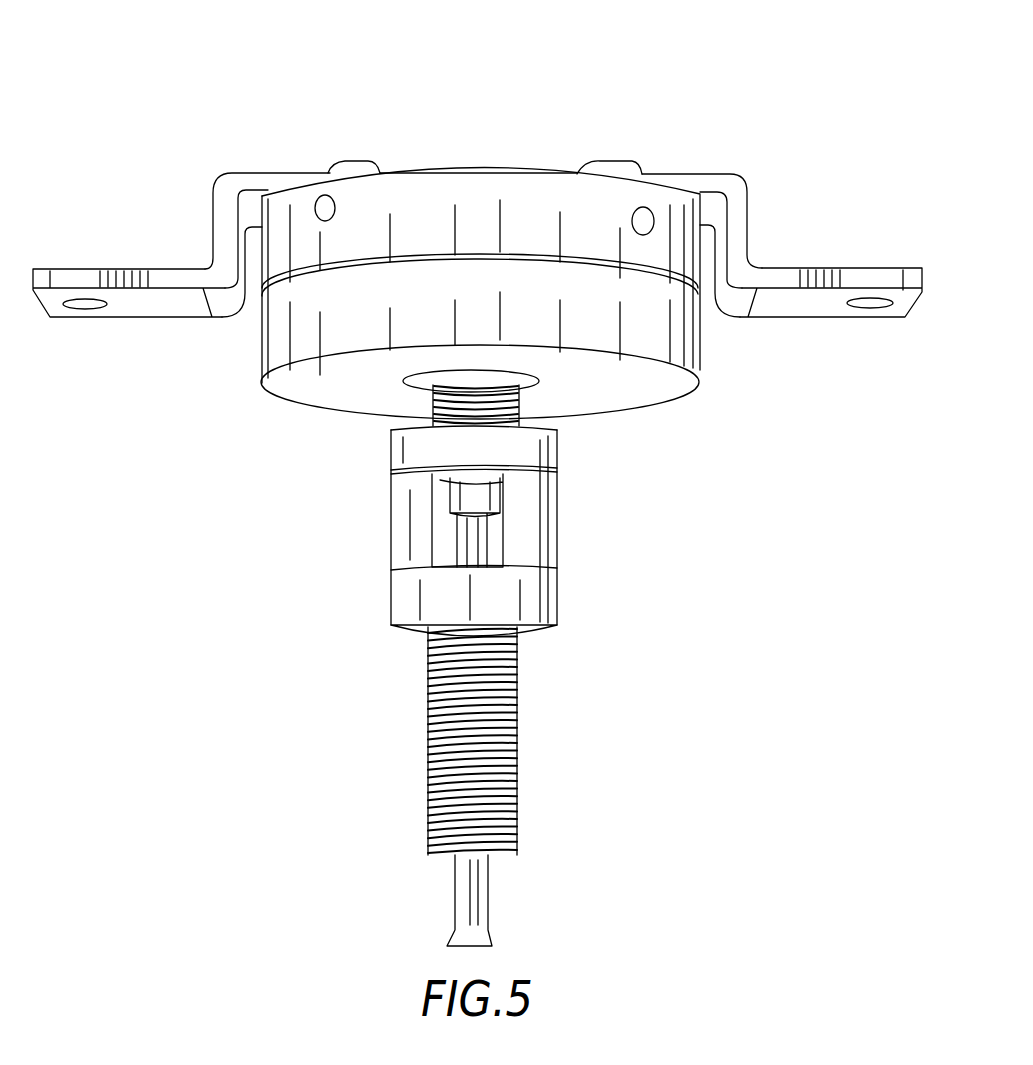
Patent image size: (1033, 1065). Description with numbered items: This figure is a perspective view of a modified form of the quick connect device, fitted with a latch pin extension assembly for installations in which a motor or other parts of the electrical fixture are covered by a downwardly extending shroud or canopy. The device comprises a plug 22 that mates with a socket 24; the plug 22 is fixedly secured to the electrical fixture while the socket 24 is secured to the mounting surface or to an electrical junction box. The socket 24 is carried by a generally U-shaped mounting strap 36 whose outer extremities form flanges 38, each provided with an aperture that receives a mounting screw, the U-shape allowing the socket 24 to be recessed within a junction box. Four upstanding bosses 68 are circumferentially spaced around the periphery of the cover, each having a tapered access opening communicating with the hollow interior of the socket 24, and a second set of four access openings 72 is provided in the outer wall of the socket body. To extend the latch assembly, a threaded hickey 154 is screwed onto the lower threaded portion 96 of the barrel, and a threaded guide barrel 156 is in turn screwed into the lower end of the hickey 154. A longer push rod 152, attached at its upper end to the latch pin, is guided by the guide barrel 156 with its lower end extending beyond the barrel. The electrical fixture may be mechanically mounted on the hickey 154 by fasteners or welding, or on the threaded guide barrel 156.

The plug 22 is at (677, 347).
The socket 24 is at (547, 190).
The mounting strap 36 is at (275, 170).
The flanges 38 is at (145, 278).
The upstanding bosses 68 is at (340, 165).
The access openings 72 is at (330, 203).
The threaded portion of the barrel 96 is at (430, 385).
The push rod 152 is at (473, 528).
The threaded hickey 154 is at (538, 608).
The threaded guide barrel 156 is at (517, 730).